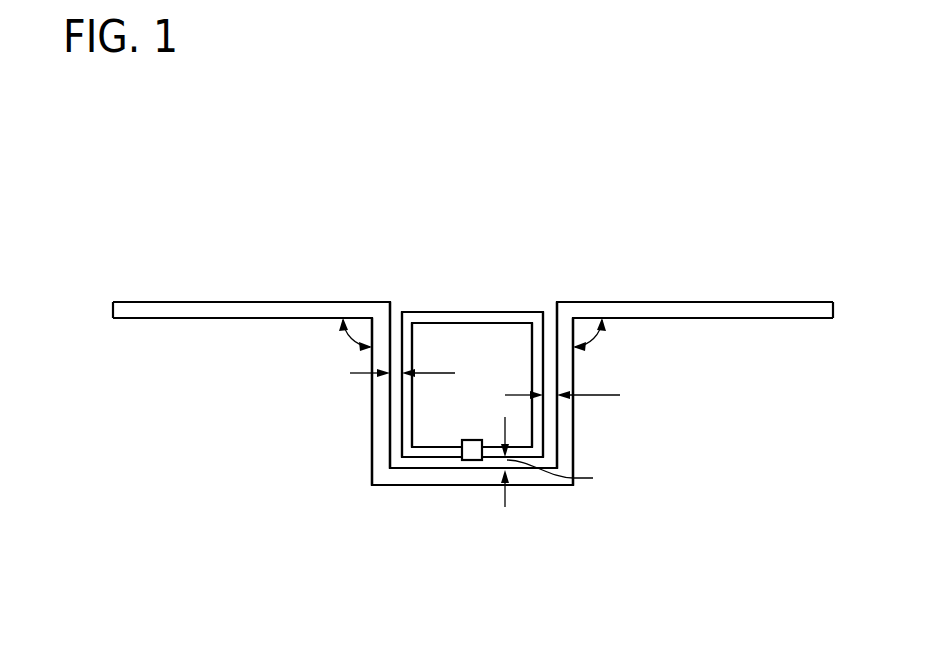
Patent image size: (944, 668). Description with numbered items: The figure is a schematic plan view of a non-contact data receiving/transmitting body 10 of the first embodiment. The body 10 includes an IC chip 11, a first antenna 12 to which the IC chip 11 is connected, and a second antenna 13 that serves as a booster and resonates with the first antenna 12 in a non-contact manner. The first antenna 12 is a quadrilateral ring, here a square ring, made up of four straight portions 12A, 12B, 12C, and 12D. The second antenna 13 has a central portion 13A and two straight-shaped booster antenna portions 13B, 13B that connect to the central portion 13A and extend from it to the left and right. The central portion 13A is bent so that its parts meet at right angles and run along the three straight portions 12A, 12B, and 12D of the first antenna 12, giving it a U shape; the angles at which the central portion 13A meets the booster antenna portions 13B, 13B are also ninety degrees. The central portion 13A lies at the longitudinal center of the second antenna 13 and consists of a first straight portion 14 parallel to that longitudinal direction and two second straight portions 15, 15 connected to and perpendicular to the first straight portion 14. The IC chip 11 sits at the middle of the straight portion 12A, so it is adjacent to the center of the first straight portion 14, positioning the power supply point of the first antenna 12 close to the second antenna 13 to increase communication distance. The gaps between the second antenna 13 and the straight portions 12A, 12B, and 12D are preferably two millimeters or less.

The non-contact data receiving/transmitting body 10 is at (756, 188).
The IC chip 11 is at (471, 438).
The first antenna 12 is at (513, 310).
The straight portion 12A is at (436, 452).
The straight portion 12B is at (407, 397).
The straight portion 12C is at (473, 310).
The straight portion 12D is at (540, 415).
The second antenna 13 is at (573, 447).
The central portion 13A is at (372, 505).
The booster antenna portion 13B is at (390, 283).
The first straight portion 14 is at (413, 474).
The second straight portion 15 is at (380, 423).